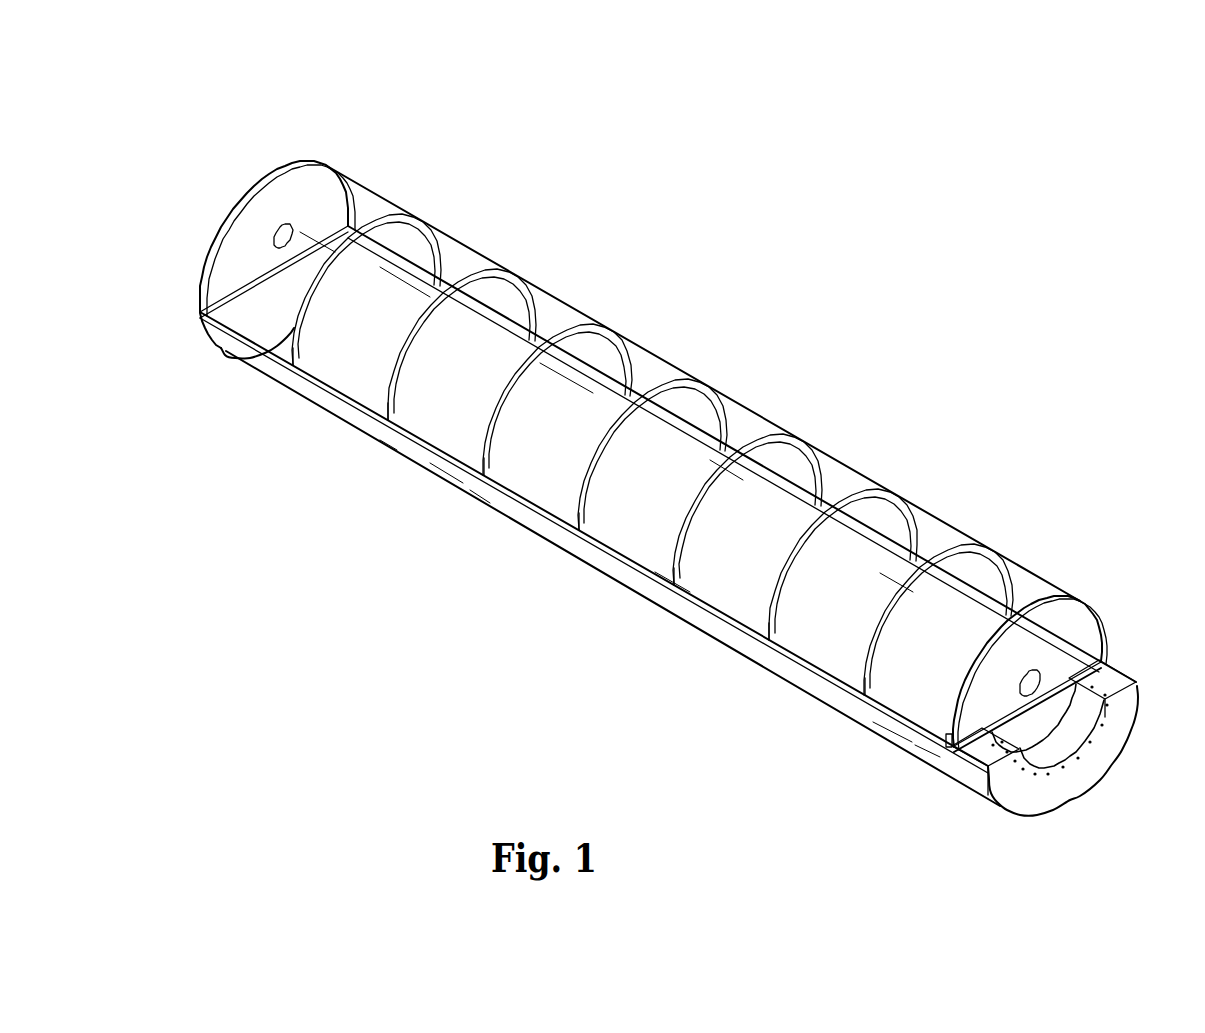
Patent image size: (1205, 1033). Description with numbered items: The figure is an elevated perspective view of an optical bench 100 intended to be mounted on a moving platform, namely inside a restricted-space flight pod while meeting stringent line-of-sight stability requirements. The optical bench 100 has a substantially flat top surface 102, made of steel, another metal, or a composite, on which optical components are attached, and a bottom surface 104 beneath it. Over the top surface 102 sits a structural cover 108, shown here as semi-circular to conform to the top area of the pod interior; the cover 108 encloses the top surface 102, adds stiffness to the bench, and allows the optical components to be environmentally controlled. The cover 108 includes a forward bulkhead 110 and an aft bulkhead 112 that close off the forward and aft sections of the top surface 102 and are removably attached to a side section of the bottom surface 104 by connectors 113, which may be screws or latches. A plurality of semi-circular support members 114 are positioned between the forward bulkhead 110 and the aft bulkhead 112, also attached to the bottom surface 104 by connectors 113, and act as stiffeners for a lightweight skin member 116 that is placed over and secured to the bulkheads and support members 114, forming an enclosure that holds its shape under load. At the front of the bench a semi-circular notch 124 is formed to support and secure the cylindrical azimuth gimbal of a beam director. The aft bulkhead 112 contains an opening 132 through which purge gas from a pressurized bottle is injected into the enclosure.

The optical bench 100 is at (797, 146).
The top surface 102 is at (730, 572).
The bottom surface 104 is at (818, 708).
The cover 108 is at (678, 348).
The forward bulkhead 110 is at (1086, 620).
The aft bulkhead 112 is at (313, 158).
The connectors 113 is at (947, 752).
The support members 114 is at (390, 388).
The skin member 116 is at (760, 408).
The notch 124 is at (1080, 731).
The opening 132 is at (270, 232).